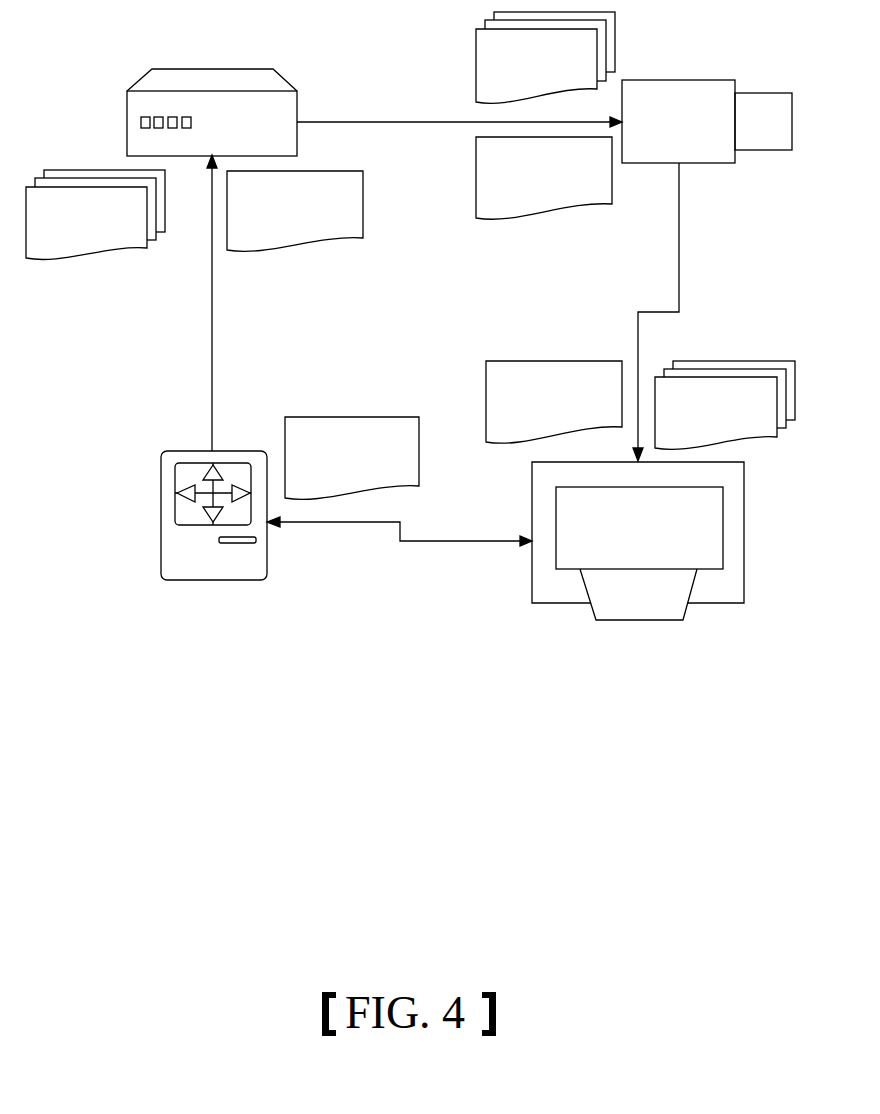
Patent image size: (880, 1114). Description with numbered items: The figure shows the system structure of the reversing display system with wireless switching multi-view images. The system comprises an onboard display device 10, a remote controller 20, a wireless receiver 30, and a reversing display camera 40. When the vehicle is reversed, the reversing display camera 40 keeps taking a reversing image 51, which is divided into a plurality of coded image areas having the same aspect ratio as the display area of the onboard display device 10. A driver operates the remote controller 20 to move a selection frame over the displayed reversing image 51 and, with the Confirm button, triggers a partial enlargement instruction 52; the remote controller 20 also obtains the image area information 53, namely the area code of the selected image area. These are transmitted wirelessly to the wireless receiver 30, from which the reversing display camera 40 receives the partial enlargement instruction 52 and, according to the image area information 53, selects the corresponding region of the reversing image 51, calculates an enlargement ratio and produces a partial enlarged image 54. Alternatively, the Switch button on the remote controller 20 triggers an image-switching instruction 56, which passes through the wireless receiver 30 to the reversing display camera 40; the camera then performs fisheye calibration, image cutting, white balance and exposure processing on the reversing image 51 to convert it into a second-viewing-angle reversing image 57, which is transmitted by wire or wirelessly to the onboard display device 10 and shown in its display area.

The onboard display device 10 is at (611, 537).
The remote controller 20 is at (205, 571).
The wireless receiver 30 is at (272, 141).
The reversing display camera 40 is at (677, 142).
The reversing image 51 is at (725, 405).
The partial enlargement instruction 52 is at (70, 232).
The image area information 53 is at (339, 470).
The partial enlarged image 54 is at (744, 424).
The image-switching instruction 56 is at (282, 220).
The second-viewing-angle reversing image 57 is at (542, 415).